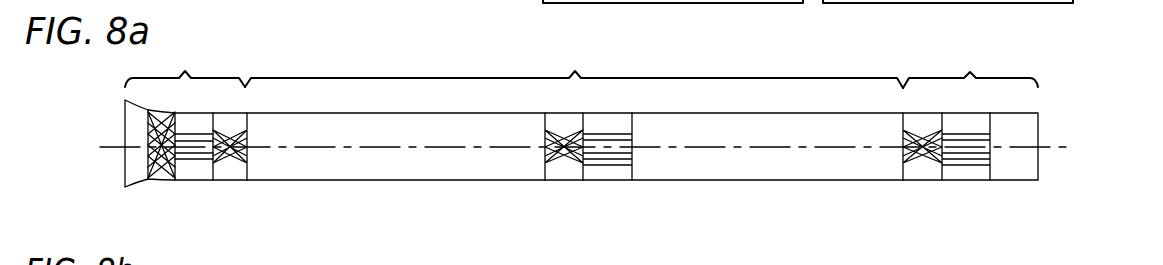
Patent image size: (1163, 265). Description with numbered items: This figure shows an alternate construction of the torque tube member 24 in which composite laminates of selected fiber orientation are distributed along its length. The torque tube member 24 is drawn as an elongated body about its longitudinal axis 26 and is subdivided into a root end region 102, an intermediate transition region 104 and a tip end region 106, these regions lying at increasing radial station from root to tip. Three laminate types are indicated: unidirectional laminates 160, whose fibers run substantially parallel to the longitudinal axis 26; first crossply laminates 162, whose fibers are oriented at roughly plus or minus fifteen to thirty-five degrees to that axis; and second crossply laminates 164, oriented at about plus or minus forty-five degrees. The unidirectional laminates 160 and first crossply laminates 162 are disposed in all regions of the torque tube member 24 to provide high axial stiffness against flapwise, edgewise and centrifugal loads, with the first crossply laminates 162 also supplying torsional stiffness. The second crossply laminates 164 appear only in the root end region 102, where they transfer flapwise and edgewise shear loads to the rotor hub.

The torque tube member 24 is at (1066, 106).
The longitudinal axis 26 is at (720, 147).
The root end region 102 is at (185, 67).
The intermediate transition region 104 is at (574, 68).
The tip end region 106 is at (970, 68).
The unidirectional laminates 160 is at (190, 168).
The first crossply laminates 162 is at (227, 170).
The second crossply laminates 164 is at (161, 176).